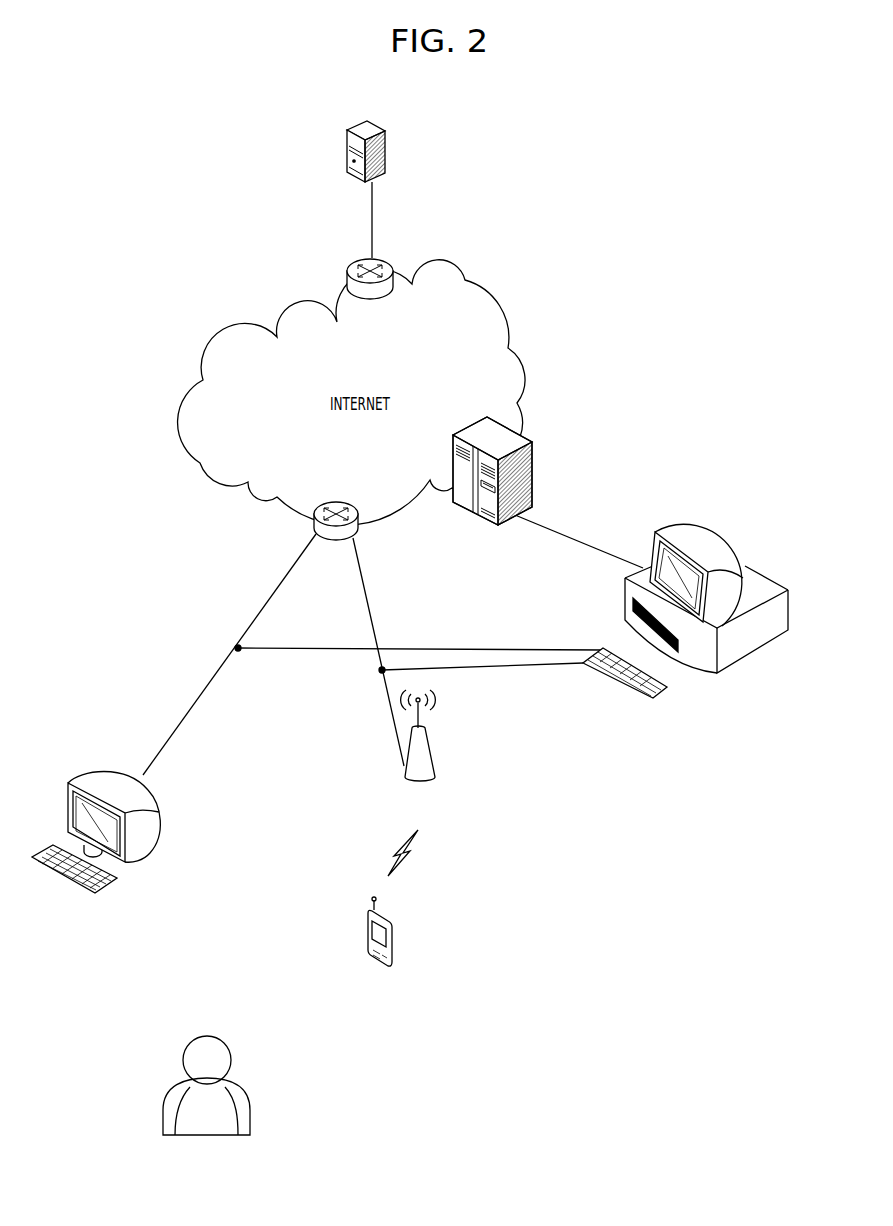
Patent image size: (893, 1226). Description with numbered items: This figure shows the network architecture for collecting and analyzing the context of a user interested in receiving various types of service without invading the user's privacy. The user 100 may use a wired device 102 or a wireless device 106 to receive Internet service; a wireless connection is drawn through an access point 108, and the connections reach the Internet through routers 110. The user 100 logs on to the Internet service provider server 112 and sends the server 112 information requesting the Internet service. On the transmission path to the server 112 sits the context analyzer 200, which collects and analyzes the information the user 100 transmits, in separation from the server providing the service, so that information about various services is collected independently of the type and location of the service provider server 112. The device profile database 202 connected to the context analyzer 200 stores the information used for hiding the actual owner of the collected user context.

The user 100 is at (243, 1090).
The wired device 102 is at (108, 768).
The wireless device 106 is at (392, 935).
The access point 108 is at (432, 745).
The router 110 is at (391, 257).
The Internet service provider server 112 is at (386, 141).
The context analyzer 200 is at (735, 545).
The device profile database 202 is at (533, 441).